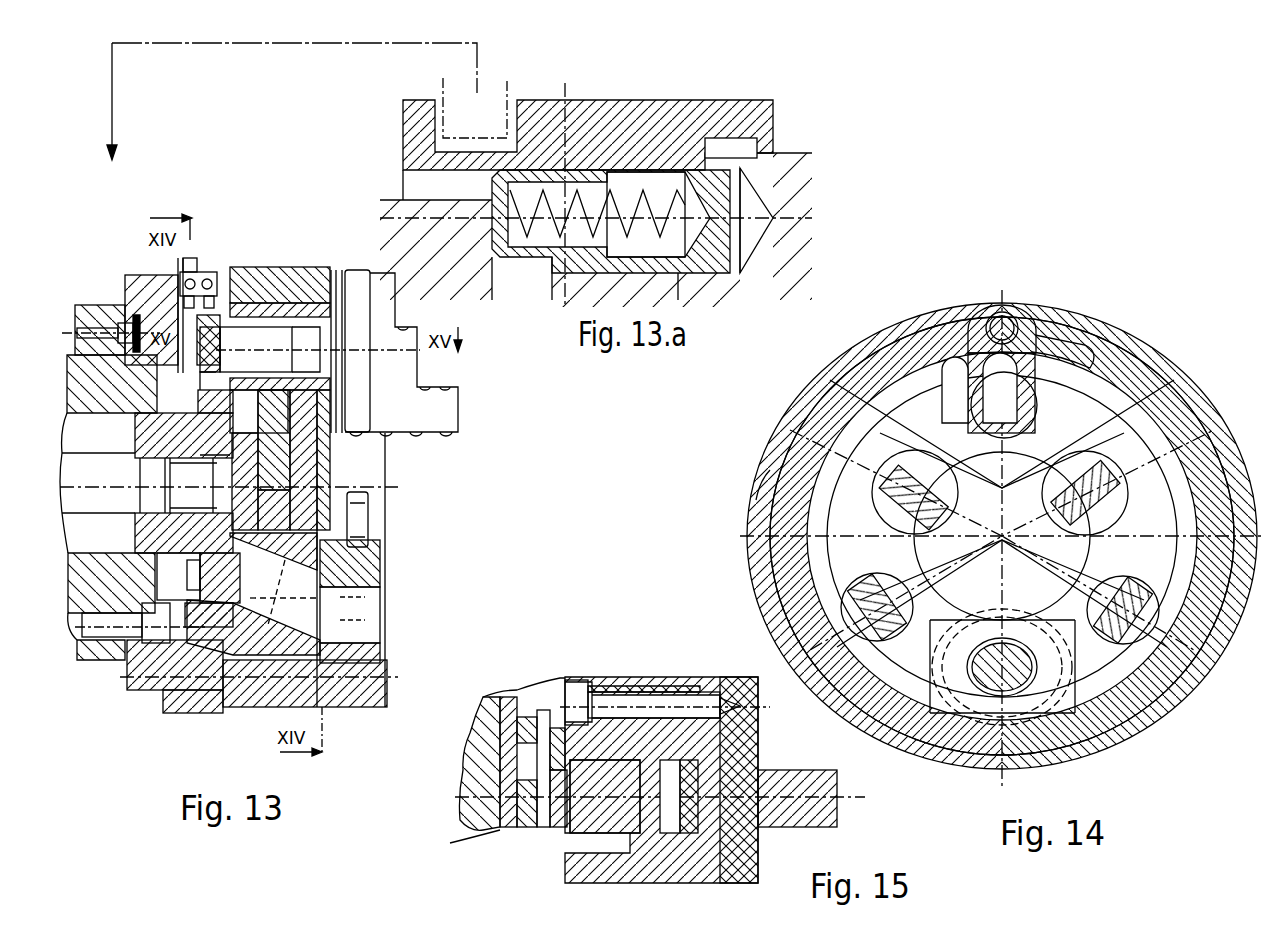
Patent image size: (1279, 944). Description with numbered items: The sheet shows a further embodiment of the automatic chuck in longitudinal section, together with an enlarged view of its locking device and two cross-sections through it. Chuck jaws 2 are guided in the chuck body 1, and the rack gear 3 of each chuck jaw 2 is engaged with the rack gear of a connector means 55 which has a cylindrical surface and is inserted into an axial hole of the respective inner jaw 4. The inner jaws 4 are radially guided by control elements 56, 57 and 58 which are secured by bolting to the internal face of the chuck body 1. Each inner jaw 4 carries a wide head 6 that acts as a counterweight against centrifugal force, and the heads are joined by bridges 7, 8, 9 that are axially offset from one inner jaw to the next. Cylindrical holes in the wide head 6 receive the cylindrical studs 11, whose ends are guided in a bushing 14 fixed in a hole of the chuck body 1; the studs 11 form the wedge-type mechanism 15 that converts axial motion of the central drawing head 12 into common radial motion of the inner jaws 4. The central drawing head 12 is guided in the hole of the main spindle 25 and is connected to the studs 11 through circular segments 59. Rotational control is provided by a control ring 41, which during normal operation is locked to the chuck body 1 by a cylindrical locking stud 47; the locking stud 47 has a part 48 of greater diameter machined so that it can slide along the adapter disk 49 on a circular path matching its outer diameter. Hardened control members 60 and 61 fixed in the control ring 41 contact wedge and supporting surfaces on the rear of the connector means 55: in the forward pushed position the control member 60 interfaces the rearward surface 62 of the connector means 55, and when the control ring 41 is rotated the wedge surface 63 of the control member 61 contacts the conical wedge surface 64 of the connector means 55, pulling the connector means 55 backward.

In FIG. 13a, the chuck body 1 is at (792, 175).
In FIG. 14, the chuck body 1 is at (1170, 695).
In FIG. 15, the chuck body 1 is at (755, 730).
In FIG. 15, the chuck jaws 2 is at (838, 788).
In FIG. 15, the rack gear 3 is at (715, 860).
In FIG. 13, the inner jaws 4 is at (292, 275).
In FIG. 15, the inner jaws 4 is at (640, 712).
In FIG. 13, the wide head 6 is at (236, 707).
In FIG. 13, the bridge 7 is at (372, 513).
In FIG. 13, the bridge 8 is at (340, 466).
In FIG. 14, the bridge 8 is at (1115, 445).
In FIG. 13, the bridge 9 is at (340, 442).
In FIG. 14, the bridge 9 is at (768, 465).
In FIG. 13, the cylindrical studs 11 is at (362, 612).
In FIG. 13, the central drawing head 12 is at (95, 545).
In FIG. 13, the bushing 14 is at (378, 650).
In FIG. 14, the bushing 14 is at (950, 712).
In FIG. 13, the wedge-type mechanism 15 is at (375, 632).
In FIG. 14, the wedge-type mechanism 15 is at (1030, 740).
In FIG. 13, the main spindle 25 is at (80, 378).
In FIG. 13, the control ring 41 is at (170, 712).
In FIG. 13a, the control ring 41 is at (648, 137).
In FIG. 14, the control ring 41 is at (1082, 340).
In FIG. 13, the locking stud 47 is at (207, 266).
In FIG. 13a, the locking stud 47 is at (705, 172).
In FIG. 14, the locking stud 47 is at (1004, 322).
In FIG. 13a, the part with greater diameter 48 is at (420, 148).
In FIG. 13, the adapter disk 49 is at (142, 288).
In FIG. 13, the connector means 55 is at (250, 340).
In FIG. 14, the connector means 55 is at (1130, 710).
In FIG. 15, the connector means 55 is at (605, 830).
In FIG. 15, the control element 56 is at (702, 725).
In FIG. 15, the control element 57 is at (667, 688).
In FIG. 15, the control element 58 is at (600, 683).
In FIG. 14, the circular segments 59 is at (835, 400).
In FIG. 15, the control member 60 is at (505, 843).
In FIG. 15, the control member 61 is at (472, 725).
In FIG. 15, the rearward surface 62 is at (530, 845).
In FIG. 15, the wedge surface 63 is at (472, 775).
In FIG. 15, the conical wedge surface 64 is at (475, 830).